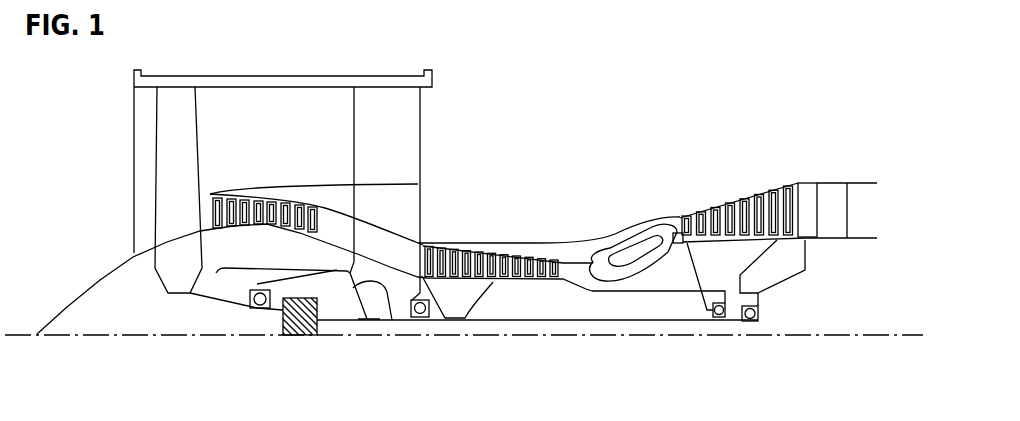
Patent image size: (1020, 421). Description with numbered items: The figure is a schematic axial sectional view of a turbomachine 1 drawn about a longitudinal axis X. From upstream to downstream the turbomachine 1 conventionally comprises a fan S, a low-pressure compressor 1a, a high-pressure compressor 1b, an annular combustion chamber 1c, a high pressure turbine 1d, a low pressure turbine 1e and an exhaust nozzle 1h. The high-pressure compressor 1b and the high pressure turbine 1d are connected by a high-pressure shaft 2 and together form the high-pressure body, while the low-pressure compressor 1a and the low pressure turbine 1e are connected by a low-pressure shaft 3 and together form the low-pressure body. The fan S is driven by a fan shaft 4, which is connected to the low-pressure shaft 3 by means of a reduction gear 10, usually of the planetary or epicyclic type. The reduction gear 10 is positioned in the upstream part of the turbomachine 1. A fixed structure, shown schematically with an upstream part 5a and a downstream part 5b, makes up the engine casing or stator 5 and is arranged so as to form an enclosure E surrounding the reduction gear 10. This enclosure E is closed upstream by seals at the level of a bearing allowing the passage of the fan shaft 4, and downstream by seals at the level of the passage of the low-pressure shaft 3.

The turbomachine 1 is at (549, 151).
The low-pressure compressor 1a is at (238, 199).
The high-pressure compressor 1b is at (457, 249).
The annular combustion chamber 1c is at (626, 250).
The high pressure turbine 1d is at (679, 233).
The low pressure turbine 1e is at (803, 195).
The exhaust nozzle 1h is at (862, 203).
The high-pressure shaft 2 is at (617, 293).
The low-pressure shaft 3 is at (520, 321).
The fan shaft 4 is at (240, 309).
The engine casing or stator 5 is at (334, 260).
The upstream part 5a is at (216, 273).
The downstream part 5b is at (393, 321).
The reduction gear 10 is at (297, 321).
The enclosure E is at (328, 296).
The fan S is at (168, 140).
The engine axis X is at (13, 337).